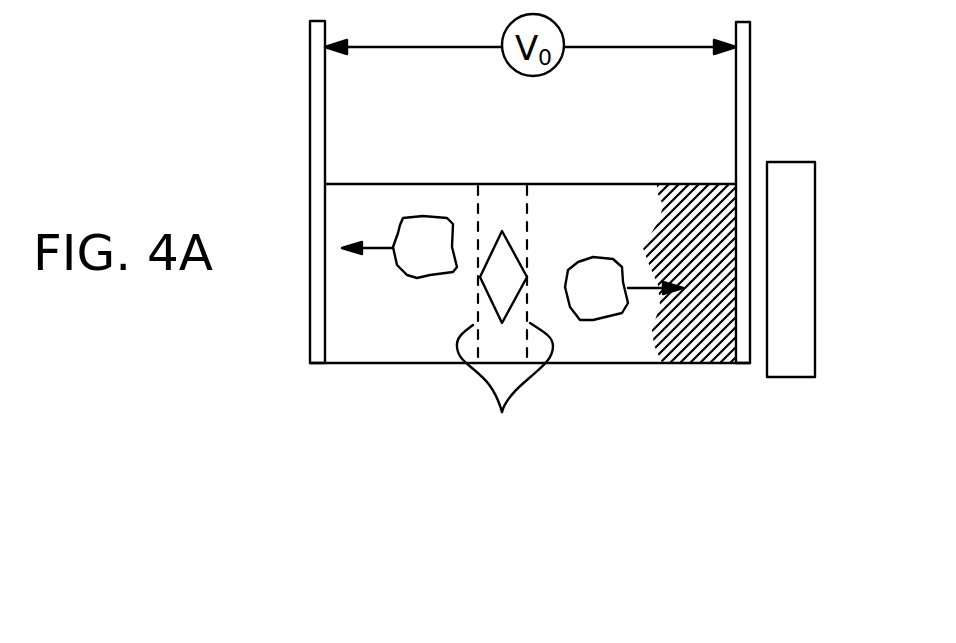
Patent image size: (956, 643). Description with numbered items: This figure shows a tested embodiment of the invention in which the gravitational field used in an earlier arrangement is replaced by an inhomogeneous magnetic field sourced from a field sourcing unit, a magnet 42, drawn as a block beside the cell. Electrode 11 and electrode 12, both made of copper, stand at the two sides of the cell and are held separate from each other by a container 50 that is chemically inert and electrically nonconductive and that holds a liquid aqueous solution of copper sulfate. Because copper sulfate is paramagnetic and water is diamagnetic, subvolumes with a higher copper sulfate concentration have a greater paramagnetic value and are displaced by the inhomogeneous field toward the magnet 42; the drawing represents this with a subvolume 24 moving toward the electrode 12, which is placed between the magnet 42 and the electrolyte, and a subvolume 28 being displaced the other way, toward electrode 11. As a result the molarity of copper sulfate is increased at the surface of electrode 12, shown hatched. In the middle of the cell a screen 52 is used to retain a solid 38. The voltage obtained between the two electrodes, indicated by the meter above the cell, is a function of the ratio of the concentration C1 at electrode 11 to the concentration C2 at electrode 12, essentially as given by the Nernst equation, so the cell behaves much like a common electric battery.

The electrode 11 is at (310, 125).
The electrode 12 is at (750, 133).
The subvolume 24 is at (585, 258).
The subvolume 28 is at (423, 217).
The solid 38 is at (511, 228).
The magnet 42 is at (815, 352).
The container 50 is at (400, 365).
The screen 52 is at (505, 318).
The concentration C1 is at (348, 322).
The concentration C2 is at (703, 325).